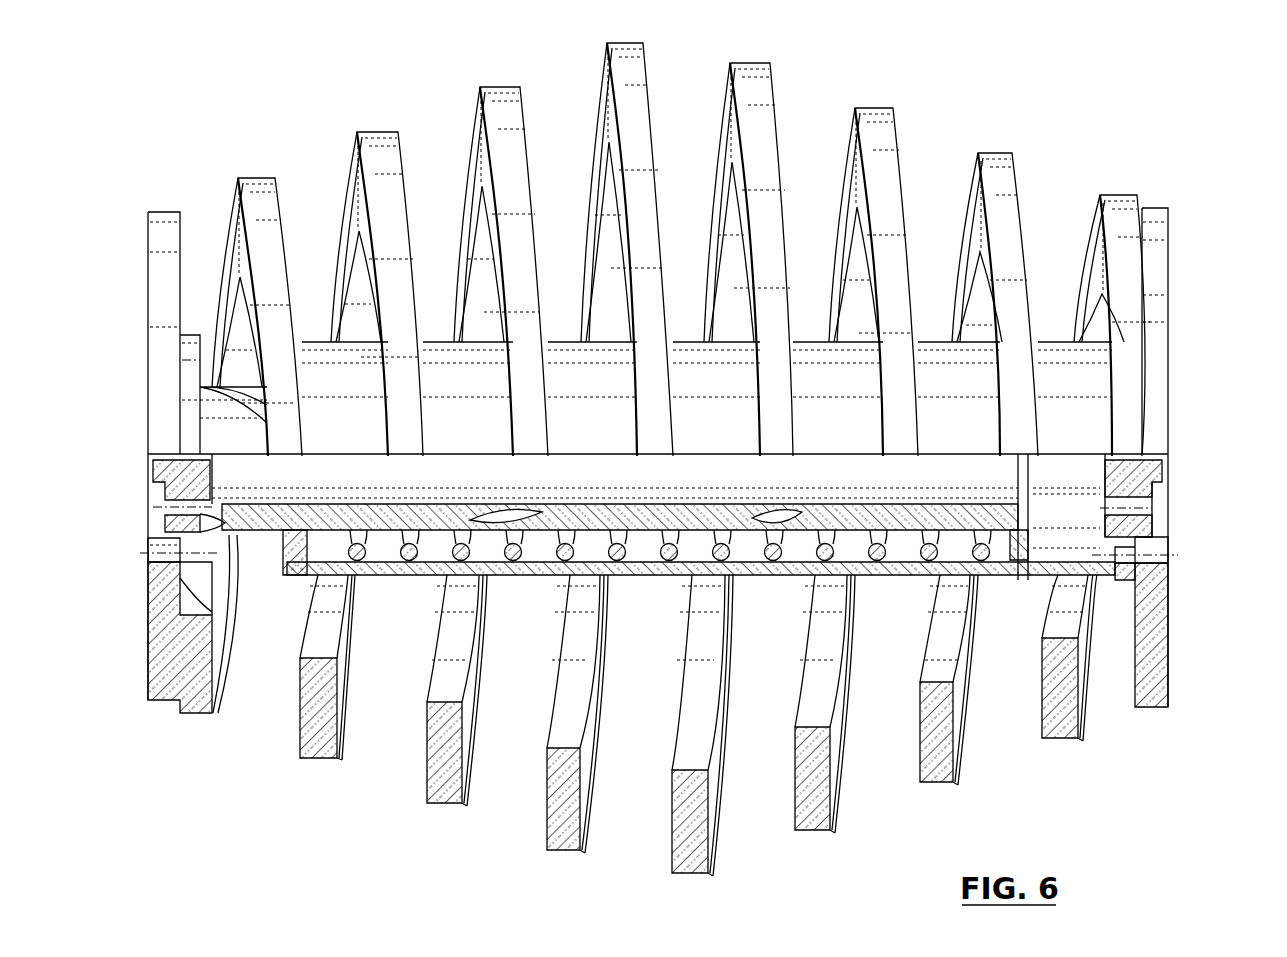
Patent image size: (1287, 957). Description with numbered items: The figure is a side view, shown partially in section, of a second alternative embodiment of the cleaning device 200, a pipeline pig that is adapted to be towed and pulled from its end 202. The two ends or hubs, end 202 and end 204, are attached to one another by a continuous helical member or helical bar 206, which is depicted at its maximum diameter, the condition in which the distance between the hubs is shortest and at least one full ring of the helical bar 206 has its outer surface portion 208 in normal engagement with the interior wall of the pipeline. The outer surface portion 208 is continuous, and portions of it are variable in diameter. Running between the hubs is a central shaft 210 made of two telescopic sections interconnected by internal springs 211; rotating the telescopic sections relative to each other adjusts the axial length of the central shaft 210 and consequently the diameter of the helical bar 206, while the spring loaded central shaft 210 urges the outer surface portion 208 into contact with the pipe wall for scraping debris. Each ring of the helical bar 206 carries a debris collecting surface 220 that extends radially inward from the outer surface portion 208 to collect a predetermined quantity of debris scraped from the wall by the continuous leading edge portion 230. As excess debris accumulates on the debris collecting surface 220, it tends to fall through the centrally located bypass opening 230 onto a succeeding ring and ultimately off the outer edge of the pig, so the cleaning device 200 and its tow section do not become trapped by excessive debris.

The cleaning device 200 is at (671, 467).
The end 202 is at (106, 593).
The end 204 is at (300, 582).
The helical bar 206 is at (770, 102).
The outer surface portion 208 is at (897, 124).
The central shaft 210 is at (543, 497).
The internal springs 211 is at (407, 577).
The debris collecting surface 220 is at (603, 106).
The bypass opening 230 is at (612, 244).